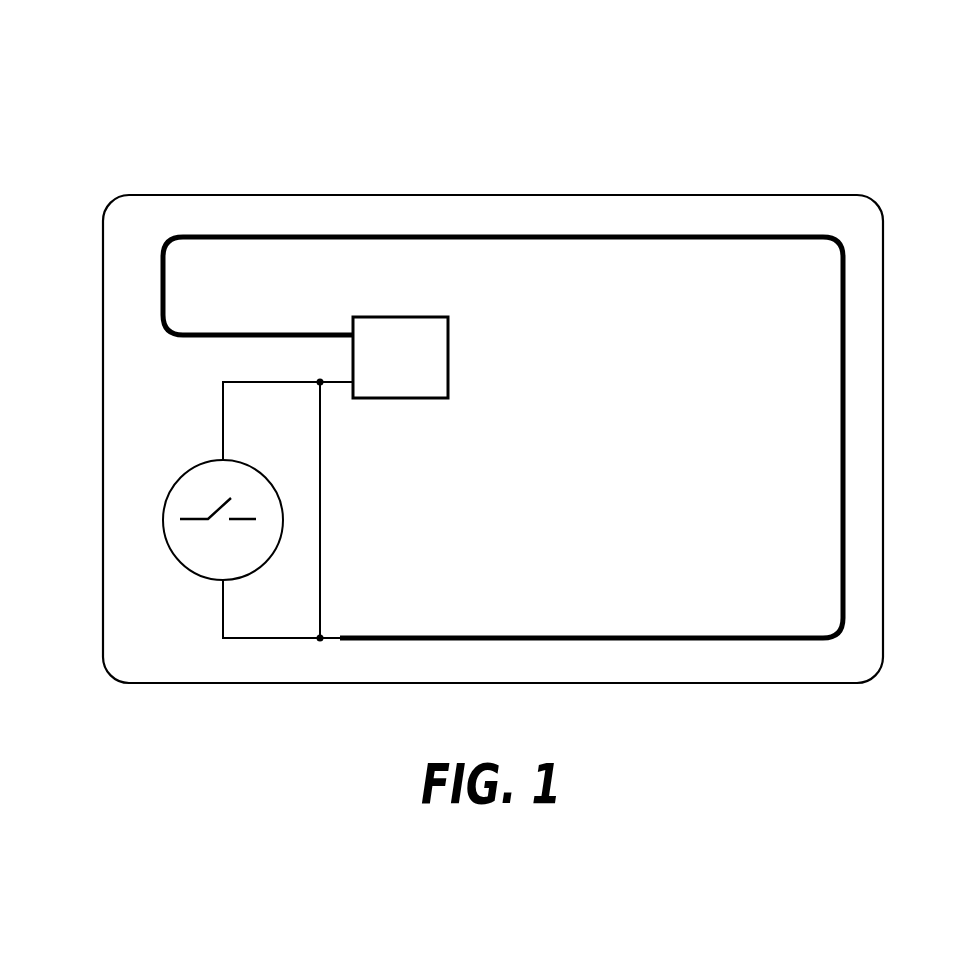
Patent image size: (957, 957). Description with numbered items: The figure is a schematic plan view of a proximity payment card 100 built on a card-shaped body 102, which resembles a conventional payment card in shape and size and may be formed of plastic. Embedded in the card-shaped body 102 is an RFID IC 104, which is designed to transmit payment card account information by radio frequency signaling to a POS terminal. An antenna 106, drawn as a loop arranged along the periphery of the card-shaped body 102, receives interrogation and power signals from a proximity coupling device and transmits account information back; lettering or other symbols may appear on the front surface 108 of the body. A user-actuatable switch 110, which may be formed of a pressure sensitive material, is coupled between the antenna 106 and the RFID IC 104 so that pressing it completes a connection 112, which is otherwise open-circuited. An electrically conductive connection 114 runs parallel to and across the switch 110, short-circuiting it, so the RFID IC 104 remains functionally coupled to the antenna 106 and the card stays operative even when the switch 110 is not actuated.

The proximity payment card 100 is at (443, 106).
The card-shaped body 102 is at (521, 292).
The RFID IC 104 is at (403, 317).
The antenna 106 is at (723, 237).
The front surface 108 is at (606, 293).
The user-actuatable switch 110 is at (163, 519).
The connection 112 is at (194, 448).
The electrically conductive connection 114 is at (322, 554).